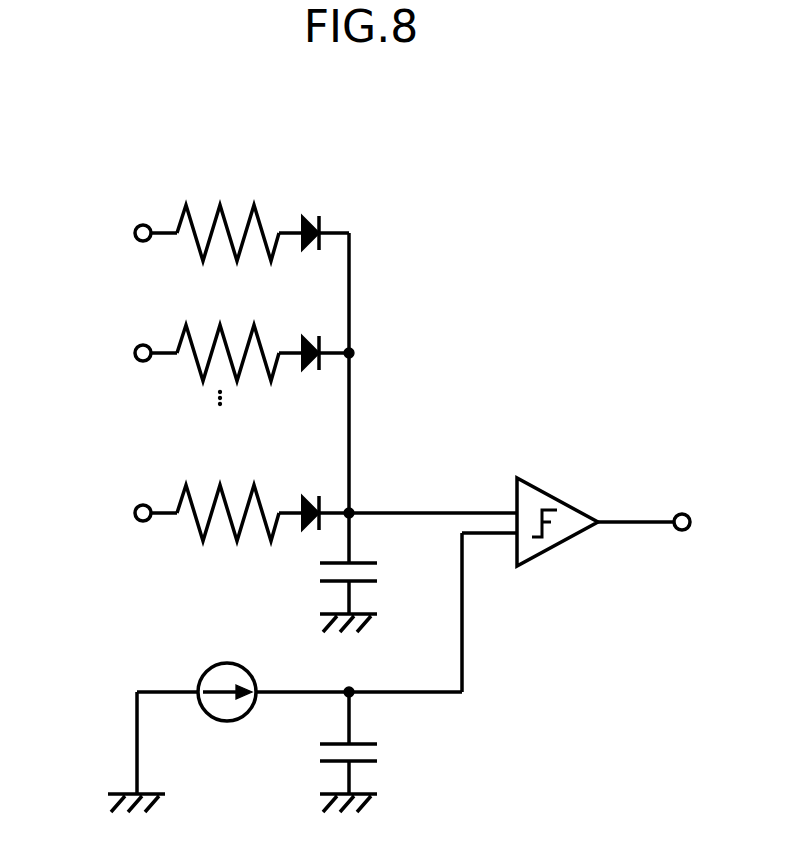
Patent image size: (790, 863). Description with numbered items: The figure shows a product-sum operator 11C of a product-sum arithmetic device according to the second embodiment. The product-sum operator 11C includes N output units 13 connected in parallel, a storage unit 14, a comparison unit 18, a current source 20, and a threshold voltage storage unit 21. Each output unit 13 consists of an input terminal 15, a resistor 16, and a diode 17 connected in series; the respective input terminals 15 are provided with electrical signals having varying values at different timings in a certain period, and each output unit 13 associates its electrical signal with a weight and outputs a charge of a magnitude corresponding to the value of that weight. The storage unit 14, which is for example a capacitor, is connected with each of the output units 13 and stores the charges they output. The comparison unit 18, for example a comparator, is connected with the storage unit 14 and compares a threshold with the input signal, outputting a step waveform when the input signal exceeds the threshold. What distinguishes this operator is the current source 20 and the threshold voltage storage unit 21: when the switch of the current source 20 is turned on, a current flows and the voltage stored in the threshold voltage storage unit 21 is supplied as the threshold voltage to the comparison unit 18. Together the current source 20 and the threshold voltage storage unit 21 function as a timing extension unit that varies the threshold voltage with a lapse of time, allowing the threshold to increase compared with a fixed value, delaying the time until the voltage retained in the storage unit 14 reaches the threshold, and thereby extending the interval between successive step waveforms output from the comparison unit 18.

The product-sum operator 11C is at (404, 134).
The output unit 13 is at (108, 232).
The storage unit 14 is at (378, 598).
The input terminal 15 is at (143, 224).
The resistor 16 is at (220, 204).
The diode 17 is at (308, 216).
The comparison unit 18 is at (570, 560).
The current source 20 is at (225, 663).
The threshold voltage storage unit 21 is at (378, 778).